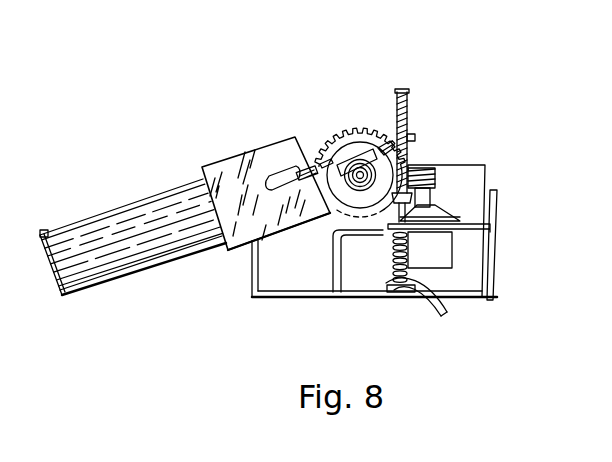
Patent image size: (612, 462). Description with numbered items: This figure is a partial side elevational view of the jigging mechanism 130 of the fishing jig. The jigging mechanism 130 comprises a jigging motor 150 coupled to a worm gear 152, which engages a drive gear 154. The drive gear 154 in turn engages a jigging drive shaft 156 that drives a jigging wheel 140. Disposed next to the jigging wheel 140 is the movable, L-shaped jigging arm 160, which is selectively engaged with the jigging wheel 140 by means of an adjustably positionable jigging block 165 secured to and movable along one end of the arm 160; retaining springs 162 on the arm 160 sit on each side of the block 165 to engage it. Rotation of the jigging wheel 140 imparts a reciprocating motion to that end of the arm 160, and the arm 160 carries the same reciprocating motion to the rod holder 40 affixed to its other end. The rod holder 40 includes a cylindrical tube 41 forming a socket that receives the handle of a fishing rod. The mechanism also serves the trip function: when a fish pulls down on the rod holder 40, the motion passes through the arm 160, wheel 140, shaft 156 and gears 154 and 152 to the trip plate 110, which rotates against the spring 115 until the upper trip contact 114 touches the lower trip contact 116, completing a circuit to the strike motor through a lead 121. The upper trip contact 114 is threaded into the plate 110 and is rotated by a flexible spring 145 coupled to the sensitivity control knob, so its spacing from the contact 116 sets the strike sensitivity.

The rod holder 40 is at (103, 225).
The tube 41 is at (75, 273).
The trip plate 110 is at (470, 232).
The upper trip contact 114 is at (392, 230).
The spring 115 is at (407, 257).
The lower trip contact 116 is at (390, 280).
The motor power or control lead 121 is at (447, 314).
The jigging mechanism 130 is at (214, 88).
The jigging wheel 140 is at (345, 196).
The flexible spring 145 is at (408, 97).
The jigging motor 150 is at (435, 243).
The worm gear 152 is at (438, 166).
The drive gear 154 is at (330, 142).
The jigging drive shaft 156 is at (358, 177).
The jigging arm 160 is at (320, 158).
The retaining springs 162 is at (318, 166).
The jigging block 165 is at (364, 148).